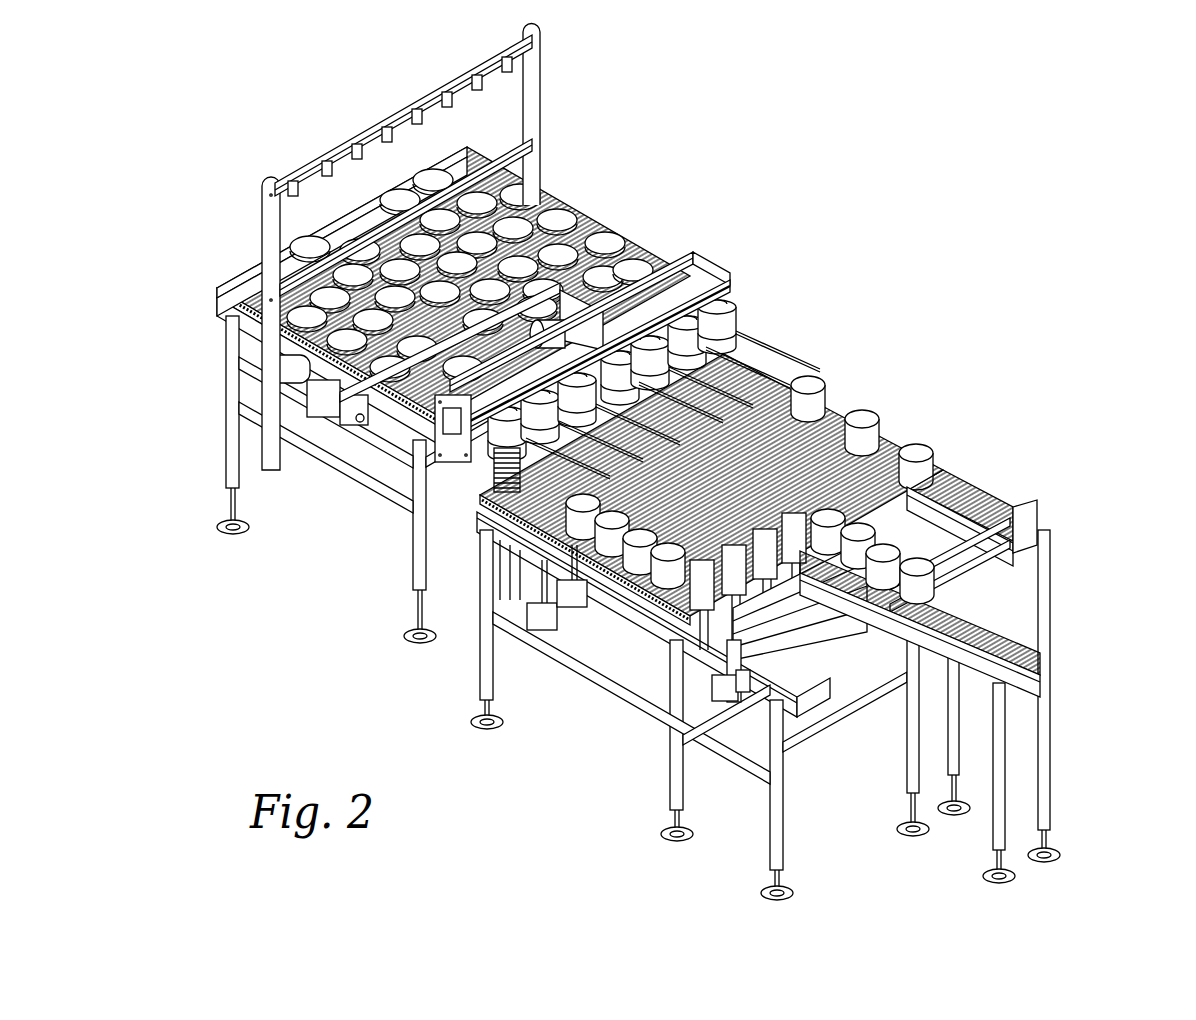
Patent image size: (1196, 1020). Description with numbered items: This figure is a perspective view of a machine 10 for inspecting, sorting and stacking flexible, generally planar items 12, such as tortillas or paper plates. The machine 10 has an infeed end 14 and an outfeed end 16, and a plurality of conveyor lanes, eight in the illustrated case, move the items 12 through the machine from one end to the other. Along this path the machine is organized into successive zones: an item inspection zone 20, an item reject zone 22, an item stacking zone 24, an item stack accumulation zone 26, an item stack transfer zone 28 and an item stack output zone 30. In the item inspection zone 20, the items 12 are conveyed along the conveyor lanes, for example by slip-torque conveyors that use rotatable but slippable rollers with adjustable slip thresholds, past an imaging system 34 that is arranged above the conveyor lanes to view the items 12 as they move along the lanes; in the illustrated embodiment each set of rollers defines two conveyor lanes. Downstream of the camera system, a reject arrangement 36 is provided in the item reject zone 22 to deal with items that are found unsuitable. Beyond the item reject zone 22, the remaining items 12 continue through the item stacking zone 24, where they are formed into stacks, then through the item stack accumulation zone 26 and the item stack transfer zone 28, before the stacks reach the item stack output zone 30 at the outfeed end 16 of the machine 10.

The machine 10 is at (902, 192).
The items 12 is at (565, 220).
The infeed end 14 is at (225, 258).
The outfeed end 16 is at (1110, 507).
The item inspection zone 20 is at (563, 117).
The item reject zone 22 is at (660, 163).
The item stacking zone 24 is at (735, 267).
The item stack accumulation zone 26 is at (888, 380).
The item stack transfer zone 28 is at (987, 483).
The item stack output zone 30 is at (1067, 613).
The imaging system 34 is at (555, 52).
The reject arrangement 36 is at (613, 220).